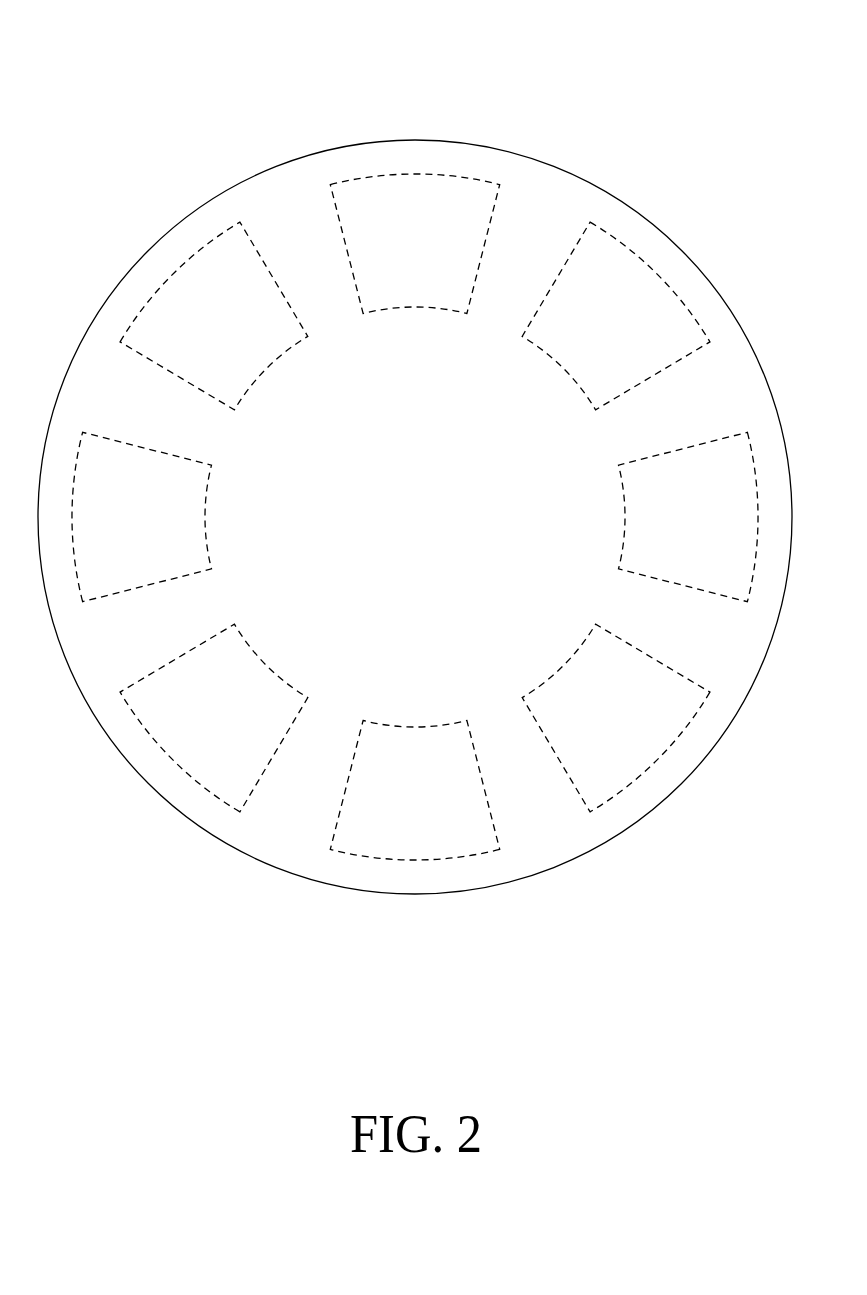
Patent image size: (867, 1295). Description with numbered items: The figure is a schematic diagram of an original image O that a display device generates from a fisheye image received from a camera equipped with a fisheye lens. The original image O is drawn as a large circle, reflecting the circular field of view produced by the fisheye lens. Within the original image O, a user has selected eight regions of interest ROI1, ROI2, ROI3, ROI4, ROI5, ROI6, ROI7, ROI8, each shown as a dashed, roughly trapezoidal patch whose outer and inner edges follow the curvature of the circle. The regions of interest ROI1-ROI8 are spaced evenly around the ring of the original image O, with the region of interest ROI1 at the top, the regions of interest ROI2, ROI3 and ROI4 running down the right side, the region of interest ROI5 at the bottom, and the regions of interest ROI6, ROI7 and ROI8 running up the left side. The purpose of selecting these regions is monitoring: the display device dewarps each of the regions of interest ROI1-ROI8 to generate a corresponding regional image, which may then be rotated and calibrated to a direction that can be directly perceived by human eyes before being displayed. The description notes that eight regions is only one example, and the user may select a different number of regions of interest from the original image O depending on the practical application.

The original image O is at (415, 140).
The region of interest ROI1 is at (414, 244).
The region of interest ROI2 is at (616, 316).
The region of interest ROI3 is at (689, 516).
The region of interest ROI4 is at (616, 718).
The region of interest ROI5 is at (414, 791).
The region of interest ROI6 is at (214, 718).
The region of interest ROI7 is at (142, 516).
The region of interest ROI8 is at (214, 316).